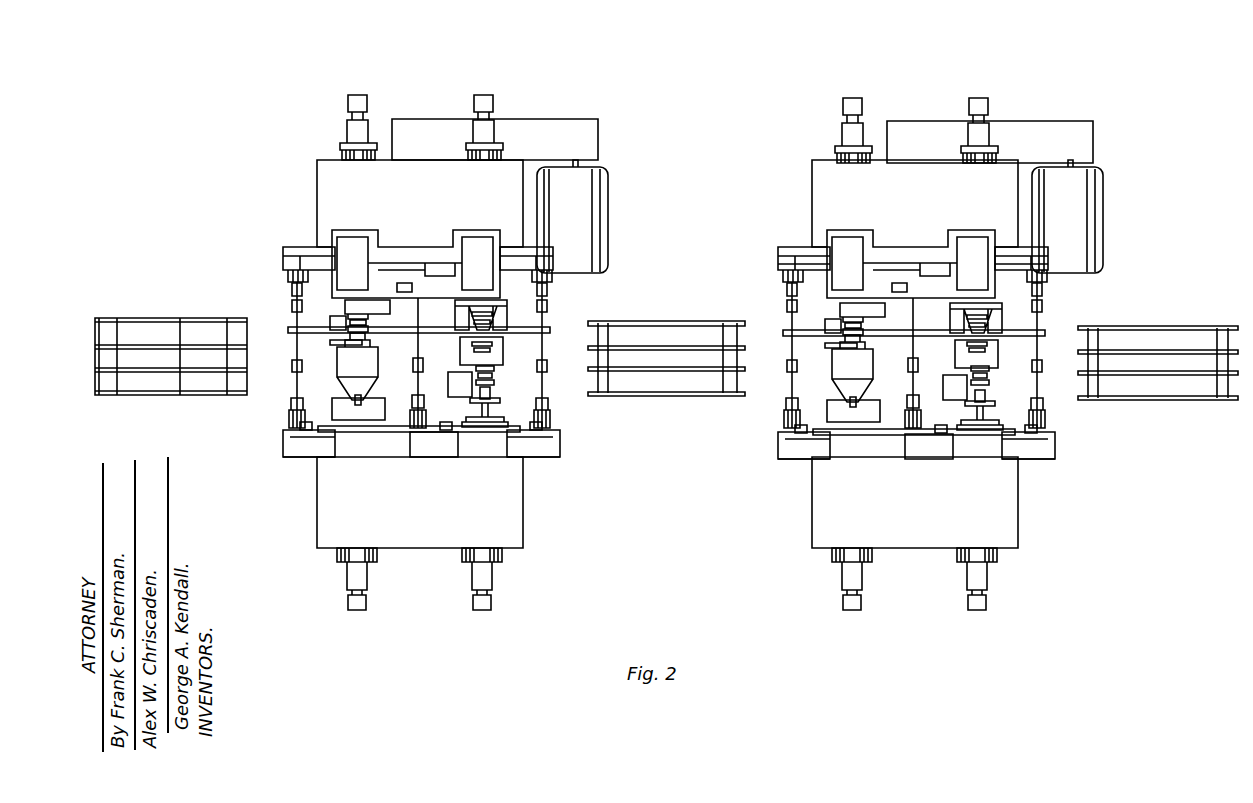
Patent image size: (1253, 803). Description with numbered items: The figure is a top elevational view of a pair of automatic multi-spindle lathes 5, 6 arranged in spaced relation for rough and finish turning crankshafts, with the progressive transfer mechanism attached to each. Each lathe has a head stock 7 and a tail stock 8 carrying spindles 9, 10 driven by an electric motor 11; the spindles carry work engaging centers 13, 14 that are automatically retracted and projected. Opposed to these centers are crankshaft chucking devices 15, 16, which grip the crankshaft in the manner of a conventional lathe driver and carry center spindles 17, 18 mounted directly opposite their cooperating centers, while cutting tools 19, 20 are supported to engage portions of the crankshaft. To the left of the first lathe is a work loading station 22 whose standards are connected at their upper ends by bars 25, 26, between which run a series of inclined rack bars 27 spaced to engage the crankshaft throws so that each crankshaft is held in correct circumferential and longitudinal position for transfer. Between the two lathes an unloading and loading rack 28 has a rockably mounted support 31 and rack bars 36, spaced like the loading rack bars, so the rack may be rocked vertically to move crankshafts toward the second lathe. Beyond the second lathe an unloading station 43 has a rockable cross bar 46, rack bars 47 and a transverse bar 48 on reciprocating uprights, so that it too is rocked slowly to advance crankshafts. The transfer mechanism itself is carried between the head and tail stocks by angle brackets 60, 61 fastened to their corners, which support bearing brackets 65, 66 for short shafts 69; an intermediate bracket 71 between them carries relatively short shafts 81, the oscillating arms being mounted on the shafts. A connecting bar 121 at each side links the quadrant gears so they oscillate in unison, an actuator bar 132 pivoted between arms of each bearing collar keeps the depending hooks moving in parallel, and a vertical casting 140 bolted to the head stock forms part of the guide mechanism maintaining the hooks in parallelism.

The multi-spindle lathe 5 is at (558, 118).
The multi-spindle lathe 6 is at (1040, 122).
The head stock 7 is at (328, 190).
The tail stock 8 is at (317, 525).
The spindle 9 is at (366, 102).
The spindle 10 is at (350, 580).
The electric motor 11 is at (603, 220).
The work engaging center 13 is at (342, 305).
The work engaging center 14 is at (490, 409).
The crankshaft chucking device 15 is at (343, 358).
The crankshaft chucking device 16 is at (500, 356).
The center spindle 17 is at (357, 412).
The center spindle 18 is at (495, 310).
The cutting tool 19 is at (337, 336).
The cutting tool 20 is at (378, 305).
The work loading station 22 is at (207, 336).
The bar 25 is at (105, 330).
The bar 26 is at (235, 380).
The rack bar 27 is at (175, 380).
The unloading and loading rack 28 is at (668, 330).
The support 31 is at (729, 335).
The rack bar 36 is at (715, 327).
The unloading station 43 is at (1193, 333).
The cross bar 46 is at (1225, 387).
The rack bar 47 is at (1170, 335).
The transverse bar 48 is at (1093, 342).
The angle bracket 60 is at (290, 250).
The angle bracket 61 is at (288, 458).
The bearing bracket 65 is at (787, 268).
The bearing bracket 66 is at (293, 436).
The short shaft 69 is at (298, 350).
The bracket 71 is at (432, 458).
The shaft 81 is at (418, 358).
The connecting bar 121 is at (405, 265).
The actuator bar 132 is at (527, 330).
The vertical casting 140 is at (350, 243).